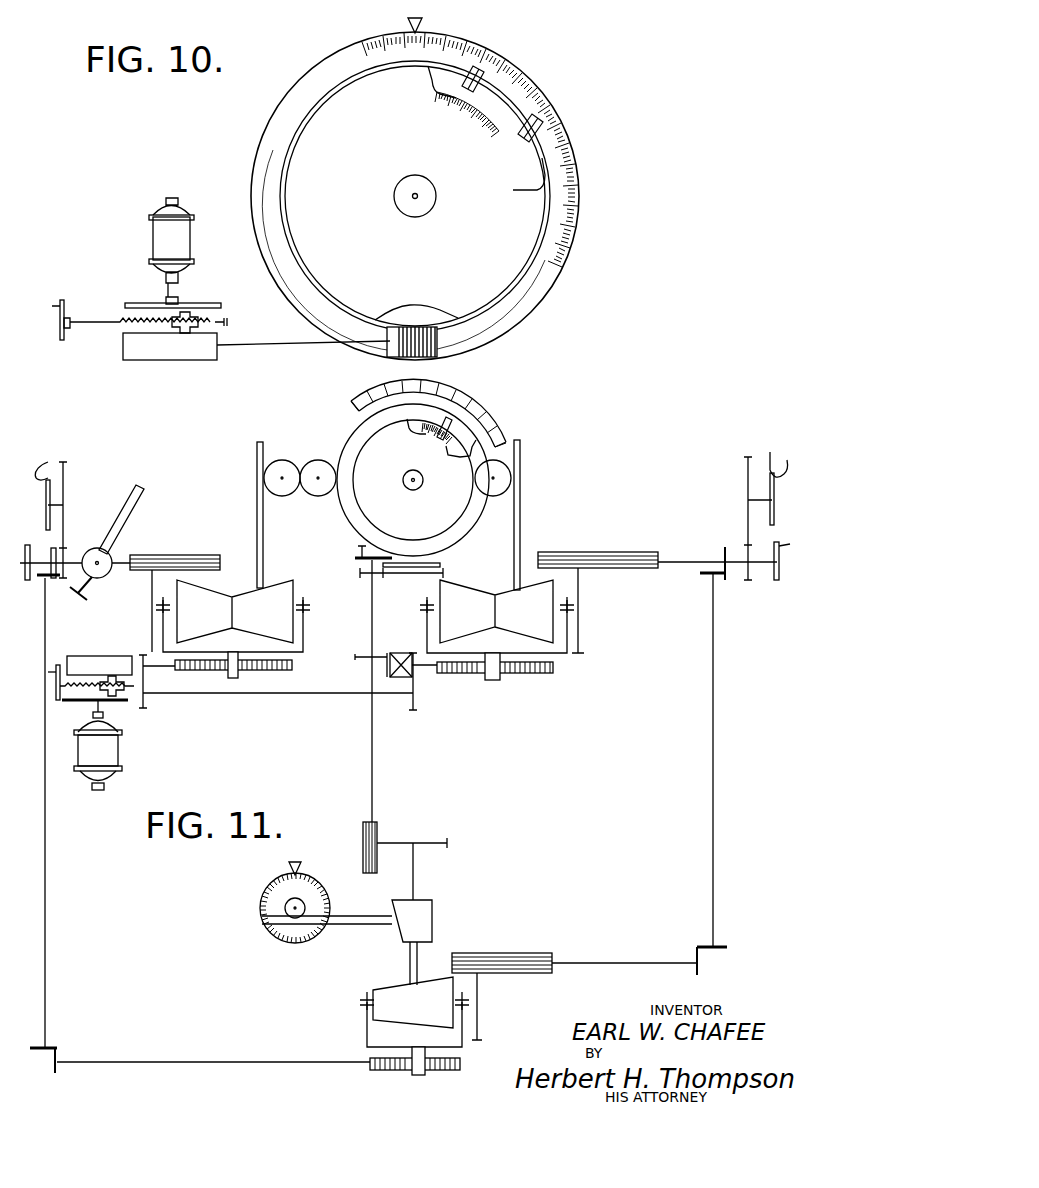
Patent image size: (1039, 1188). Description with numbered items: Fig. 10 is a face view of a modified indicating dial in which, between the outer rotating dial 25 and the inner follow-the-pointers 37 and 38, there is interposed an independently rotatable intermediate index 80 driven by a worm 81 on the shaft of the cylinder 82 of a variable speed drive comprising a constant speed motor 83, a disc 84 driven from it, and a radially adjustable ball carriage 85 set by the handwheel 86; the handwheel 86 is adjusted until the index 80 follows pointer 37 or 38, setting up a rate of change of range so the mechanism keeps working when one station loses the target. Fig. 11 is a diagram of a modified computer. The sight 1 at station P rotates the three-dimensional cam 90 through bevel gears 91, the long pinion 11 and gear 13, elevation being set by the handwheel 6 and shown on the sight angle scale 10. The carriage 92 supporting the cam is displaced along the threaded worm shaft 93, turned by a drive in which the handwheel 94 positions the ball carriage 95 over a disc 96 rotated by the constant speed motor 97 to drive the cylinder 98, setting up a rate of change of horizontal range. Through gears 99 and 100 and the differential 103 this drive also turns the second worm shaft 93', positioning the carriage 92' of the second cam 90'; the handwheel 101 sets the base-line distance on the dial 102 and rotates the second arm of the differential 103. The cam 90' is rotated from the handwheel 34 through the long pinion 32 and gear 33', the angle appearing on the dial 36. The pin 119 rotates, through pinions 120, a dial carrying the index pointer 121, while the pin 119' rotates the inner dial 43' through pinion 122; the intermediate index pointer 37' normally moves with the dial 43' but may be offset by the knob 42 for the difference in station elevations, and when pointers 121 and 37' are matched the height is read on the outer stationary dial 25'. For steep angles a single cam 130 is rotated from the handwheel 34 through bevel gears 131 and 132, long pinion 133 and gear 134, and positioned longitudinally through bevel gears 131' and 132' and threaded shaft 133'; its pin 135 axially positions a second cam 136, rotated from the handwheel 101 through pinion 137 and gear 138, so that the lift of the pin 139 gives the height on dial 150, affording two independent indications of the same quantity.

In FIG. 10, the outer rotating dial 25 is at (418, 189).
In FIG. 10, the inner pointer 37 is at (489, 59).
In FIG. 10, the inner pointer 38 is at (522, 190).
In FIG. 10, the intermediate index 80 is at (552, 150).
In FIG. 10, the worm 81 is at (405, 327).
In FIG. 10, the cylinder 82 is at (131, 360).
In FIG. 10, the constant speed motor 83 is at (156, 210).
In FIG. 10, the disc 84 is at (140, 303).
In FIG. 10, the ball carriage 85 is at (194, 318).
In FIG. 10, the handwheel 86 is at (62, 300).
In FIG. 11, the index pointer 121 is at (404, 396).
In FIG. 11, the outer stationary dial 25' is at (416, 383).
In FIG. 11, the intermediate index pointer 37' is at (474, 405).
In FIG. 11, the knob 42 is at (421, 486).
In FIG. 11, the inner dial 43' is at (424, 444).
In FIG. 11, the pin 119 is at (240, 513).
In FIG. 11, the pin 119' is at (559, 515).
In FIG. 11, the pinions 120 is at (301, 464).
In FIG. 11, the pinion 122 is at (511, 482).
In FIG. 11, the sight angle scale 10 is at (42, 462).
In FIG. 11, the handwheel 6 is at (28, 546).
In FIG. 11, the bevel gear 131' is at (59, 597).
In FIG. 11, the bevel gears 91 is at (112, 550).
In FIG. 11, the sight 1 is at (118, 528).
In FIG. 11, the long pinion 11 is at (178, 555).
In FIG. 11, the gear 13 is at (152, 601).
In FIG. 11, the three-dimensional cam 90 is at (233, 609).
In FIG. 11, the carriage 92 is at (318, 619).
In FIG. 11, the threaded worm shaft 93 is at (253, 668).
In FIG. 11, the gear 99 is at (143, 680).
In FIG. 11, the cylinder 98 is at (109, 656).
In FIG. 11, the handwheel 94 is at (60, 664).
In FIG. 11, the ball carriage 95 is at (118, 694).
In FIG. 11, the disc 96 is at (71, 702).
In FIG. 11, the constant speed motor 97 is at (80, 781).
In FIG. 11, the handwheel 101 is at (355, 557).
In FIG. 11, the dial 102 is at (402, 575).
In FIG. 11, the differential 103 is at (390, 654).
In FIG. 11, the gear 100 is at (415, 690).
In FIG. 11, the second three-dimensional cam 90' is at (497, 604).
In FIG. 11, the gear 33' is at (597, 610).
In FIG. 11, the carriage 92' is at (599, 657).
In FIG. 11, the second worm shaft 93' is at (511, 681).
In FIG. 11, the long pinion 32 is at (607, 552).
In FIG. 11, the bevel gear 131 is at (730, 581).
In FIG. 11, the dial 36 is at (785, 476).
In FIG. 11, the handwheel 34 is at (780, 541).
In FIG. 11, the pinion 137 is at (378, 826).
In FIG. 11, the gear 138 is at (437, 843).
In FIG. 11, the second three-dimensional cam 136 is at (433, 903).
In FIG. 11, the pin 139 is at (348, 916).
In FIG. 11, the dial 150 is at (260, 906).
In FIG. 11, the pin 135 is at (410, 954).
In FIG. 11, the three-dimensional cam 130 is at (372, 996).
In FIG. 11, the long pinion 133 is at (574, 952).
In FIG. 11, the gear 134 is at (478, 1000).
In FIG. 11, the threaded shaft 133' is at (285, 1071).
In FIG. 11, the bevel gear 132 is at (694, 774).
In FIG. 11, the bevel gear 132' is at (69, 825).